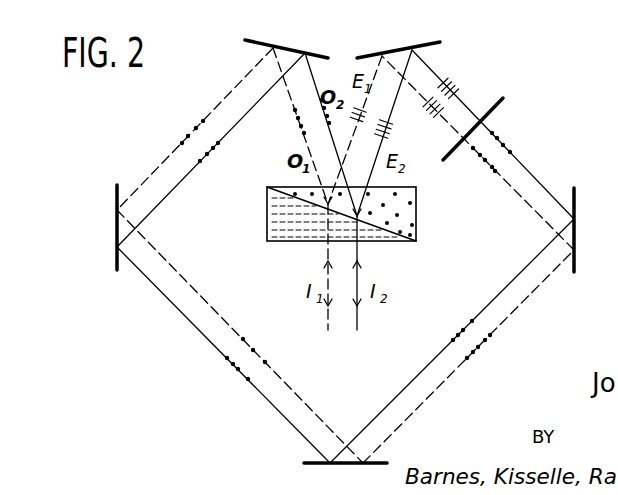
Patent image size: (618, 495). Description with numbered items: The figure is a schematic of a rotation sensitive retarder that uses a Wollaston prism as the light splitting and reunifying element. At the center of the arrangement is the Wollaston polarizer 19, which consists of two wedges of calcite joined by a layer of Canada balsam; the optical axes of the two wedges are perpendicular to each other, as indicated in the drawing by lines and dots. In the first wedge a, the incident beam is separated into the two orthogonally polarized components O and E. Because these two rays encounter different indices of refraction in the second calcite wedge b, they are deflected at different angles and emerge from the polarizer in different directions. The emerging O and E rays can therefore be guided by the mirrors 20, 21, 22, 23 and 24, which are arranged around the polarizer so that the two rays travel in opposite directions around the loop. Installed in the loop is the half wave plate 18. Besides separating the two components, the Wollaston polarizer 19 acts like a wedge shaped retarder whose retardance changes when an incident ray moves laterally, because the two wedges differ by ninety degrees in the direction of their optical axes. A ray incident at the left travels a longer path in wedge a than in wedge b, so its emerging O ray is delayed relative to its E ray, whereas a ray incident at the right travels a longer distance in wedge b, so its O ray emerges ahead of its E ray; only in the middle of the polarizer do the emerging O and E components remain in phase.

The half wave plate 18 is at (503, 100).
The Wollaston polarizer 19 is at (267, 202).
The mirror 20 is at (392, 52).
The mirror 21 is at (575, 231).
The mirror 22 is at (312, 462).
The mirror 23 is at (117, 248).
The mirror 24 is at (284, 45).
The first wedge a is at (267, 222).
The second wedge b is at (418, 220).